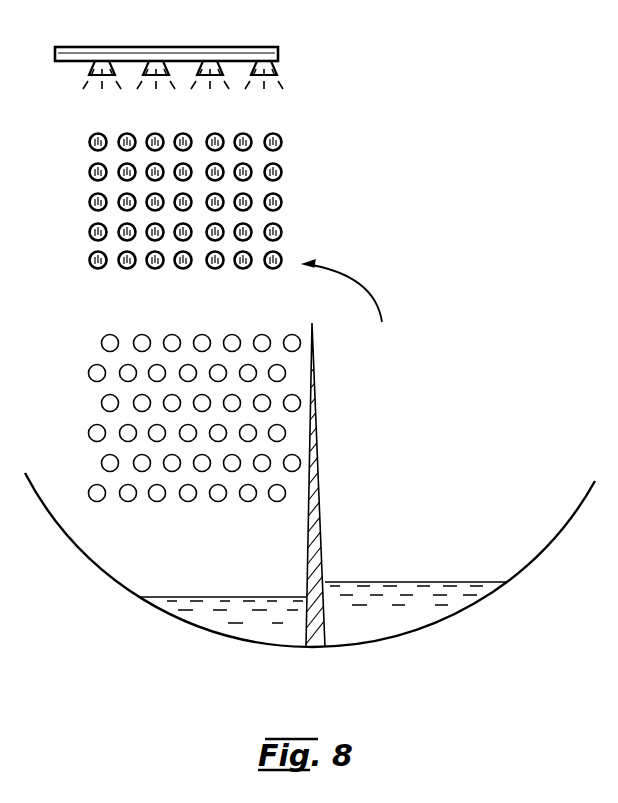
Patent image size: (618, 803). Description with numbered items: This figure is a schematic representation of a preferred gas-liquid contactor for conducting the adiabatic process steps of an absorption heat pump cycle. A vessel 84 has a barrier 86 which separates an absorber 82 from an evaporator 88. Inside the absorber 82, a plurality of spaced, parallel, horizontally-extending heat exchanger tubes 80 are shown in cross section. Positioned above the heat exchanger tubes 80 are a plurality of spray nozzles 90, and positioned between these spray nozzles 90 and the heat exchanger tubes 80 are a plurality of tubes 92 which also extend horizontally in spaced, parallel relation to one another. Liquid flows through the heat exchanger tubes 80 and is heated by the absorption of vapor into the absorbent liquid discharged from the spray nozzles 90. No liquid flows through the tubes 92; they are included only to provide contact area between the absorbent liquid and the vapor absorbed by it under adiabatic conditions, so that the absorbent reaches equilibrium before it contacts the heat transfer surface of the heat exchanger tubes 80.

The heat exchanger tubes 80 is at (90, 370).
The absorber 82 is at (68, 425).
The vessel 84 is at (485, 603).
The barrier 86 is at (318, 419).
The evaporator 88 is at (433, 466).
The spray nozzles 90 is at (262, 58).
The tubes 92 is at (278, 195).